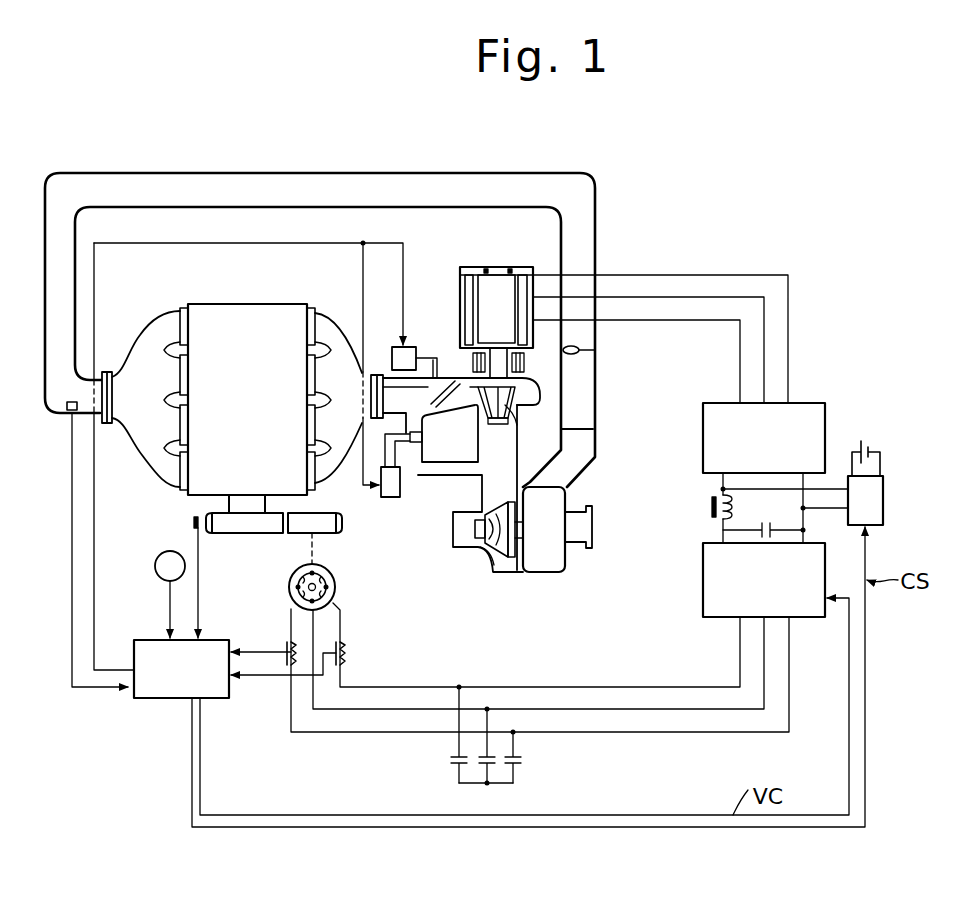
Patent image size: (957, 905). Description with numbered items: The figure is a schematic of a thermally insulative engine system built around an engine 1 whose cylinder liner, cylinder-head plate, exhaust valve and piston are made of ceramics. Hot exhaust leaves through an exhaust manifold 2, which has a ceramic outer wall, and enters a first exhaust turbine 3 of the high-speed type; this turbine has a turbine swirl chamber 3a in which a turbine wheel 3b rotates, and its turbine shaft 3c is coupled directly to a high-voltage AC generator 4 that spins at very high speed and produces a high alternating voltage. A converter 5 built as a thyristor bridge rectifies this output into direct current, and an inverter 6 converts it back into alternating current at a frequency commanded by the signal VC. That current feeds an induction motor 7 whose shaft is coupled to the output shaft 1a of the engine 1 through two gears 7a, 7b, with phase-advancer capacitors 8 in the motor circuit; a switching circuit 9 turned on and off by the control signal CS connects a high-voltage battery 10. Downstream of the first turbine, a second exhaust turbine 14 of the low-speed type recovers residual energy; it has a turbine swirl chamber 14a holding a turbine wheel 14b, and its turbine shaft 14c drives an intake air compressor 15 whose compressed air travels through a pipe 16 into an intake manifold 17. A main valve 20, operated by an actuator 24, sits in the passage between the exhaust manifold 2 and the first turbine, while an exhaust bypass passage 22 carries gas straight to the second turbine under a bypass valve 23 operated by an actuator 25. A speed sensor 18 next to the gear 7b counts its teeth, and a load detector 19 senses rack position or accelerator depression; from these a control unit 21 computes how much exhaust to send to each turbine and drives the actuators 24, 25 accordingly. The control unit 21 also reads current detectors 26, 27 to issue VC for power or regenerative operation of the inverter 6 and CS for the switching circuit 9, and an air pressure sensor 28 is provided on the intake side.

The thermally insulative engine 1 is at (255, 310).
The output shaft 1a is at (225, 503).
The exhaust manifold 2 is at (332, 330).
The first exhaust turbine 3 is at (467, 393).
The turbine swirl chamber 3a is at (533, 390).
The turbine wheel 3b is at (510, 410).
The turbine shaft 3c is at (518, 343).
The high-voltage AC generator 4 is at (520, 267).
The converter 5 is at (820, 405).
The inverter 6 is at (712, 590).
The induction motor 7 is at (336, 590).
The gear 7a is at (327, 533).
The gear 7b is at (248, 540).
The phase-advancer capacitors 8 is at (532, 763).
The switching circuit 9 is at (878, 510).
The high-voltage battery 10 is at (873, 442).
The second exhaust turbine 14 is at (476, 562).
The turbine swirl chamber 14a is at (513, 568).
The turbine wheel 14b is at (494, 563).
The turbine shaft 14c is at (477, 524).
The intake air compressor 15 is at (563, 572).
The pipe 16 is at (430, 172).
The intake manifold 17 is at (142, 348).
The speed sensor 18 is at (193, 523).
The load detector 19 is at (155, 566).
The main valve 20 is at (450, 433).
The control unit 21 is at (163, 698).
The exhaust bypass passage 22 is at (450, 468).
The bypass valve 23 is at (422, 473).
The actuator 24 is at (415, 347).
The actuator 25 is at (391, 498).
The current detector 26 is at (282, 645).
The current detector 27 is at (349, 653).
The air pressure sensor 28 is at (68, 412).